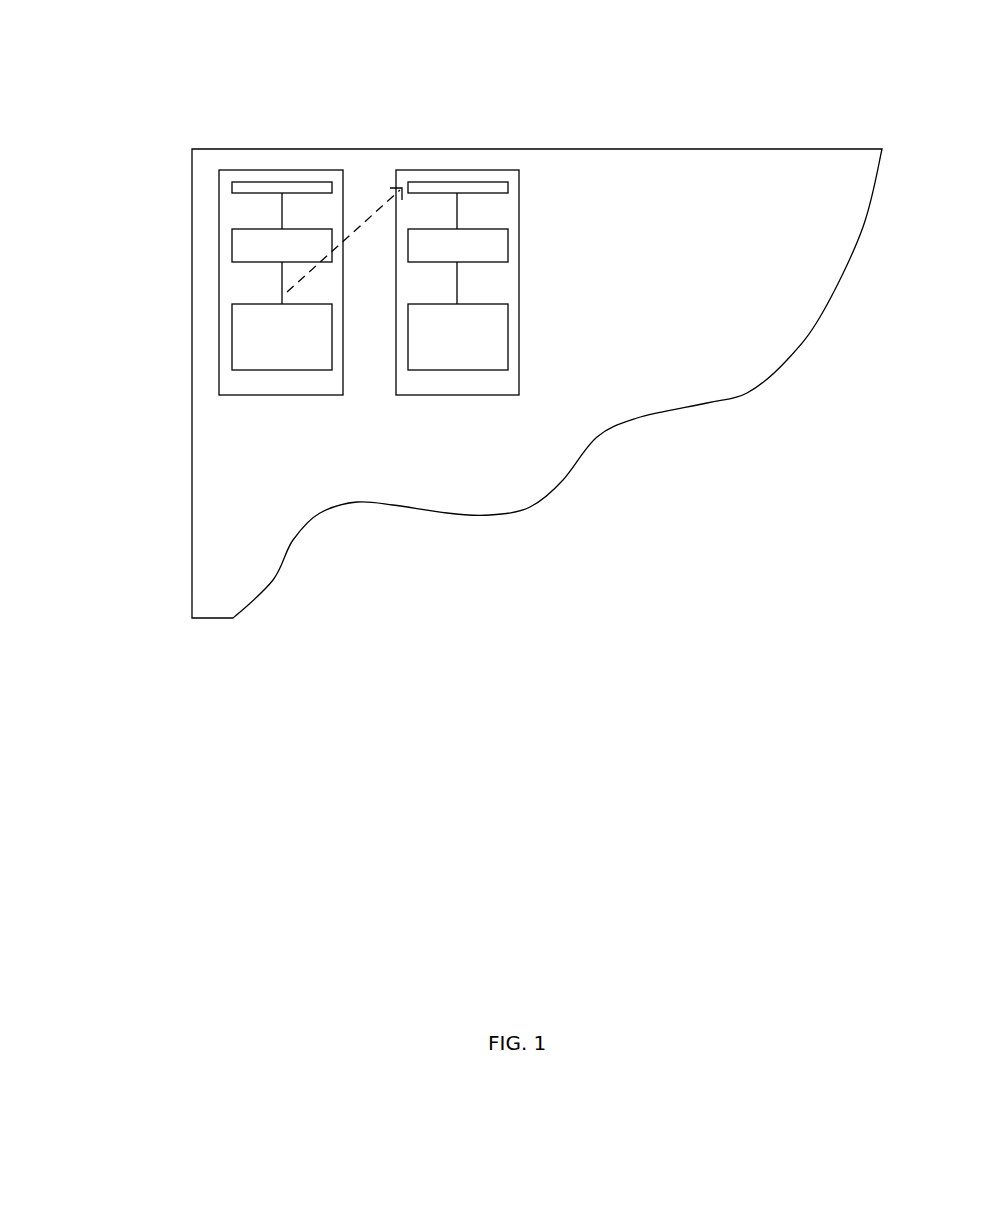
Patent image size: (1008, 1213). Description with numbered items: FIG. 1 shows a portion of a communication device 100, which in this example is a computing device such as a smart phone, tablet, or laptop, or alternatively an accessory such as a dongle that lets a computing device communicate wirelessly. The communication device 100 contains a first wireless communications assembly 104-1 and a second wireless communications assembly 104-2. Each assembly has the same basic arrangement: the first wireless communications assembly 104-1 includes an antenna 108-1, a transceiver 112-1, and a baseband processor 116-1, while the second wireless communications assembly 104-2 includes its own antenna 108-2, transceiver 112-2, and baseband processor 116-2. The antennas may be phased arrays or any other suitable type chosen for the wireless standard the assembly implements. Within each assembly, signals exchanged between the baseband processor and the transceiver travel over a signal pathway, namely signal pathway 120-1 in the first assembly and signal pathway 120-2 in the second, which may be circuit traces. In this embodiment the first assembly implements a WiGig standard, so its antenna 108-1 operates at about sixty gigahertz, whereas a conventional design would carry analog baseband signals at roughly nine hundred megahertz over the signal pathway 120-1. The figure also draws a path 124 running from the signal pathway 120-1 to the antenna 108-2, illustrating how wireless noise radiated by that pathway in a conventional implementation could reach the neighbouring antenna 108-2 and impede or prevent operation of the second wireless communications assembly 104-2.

The communication device 100 is at (318, 140).
The first wireless communications assembly 104-1 is at (205, 282).
The antenna 108-1 is at (232, 187).
The transceiver 112-1 is at (232, 247).
The baseband processor 116-1 is at (232, 355).
The signal pathway 120-1 is at (282, 292).
The second wireless communications assembly 104-2 is at (534, 229).
The antenna 108-2 is at (508, 187).
The transceiver 112-2 is at (508, 260).
The baseband processor 116-2 is at (508, 352).
The signal pathway 120-2 is at (457, 297).
The path 124 is at (358, 222).